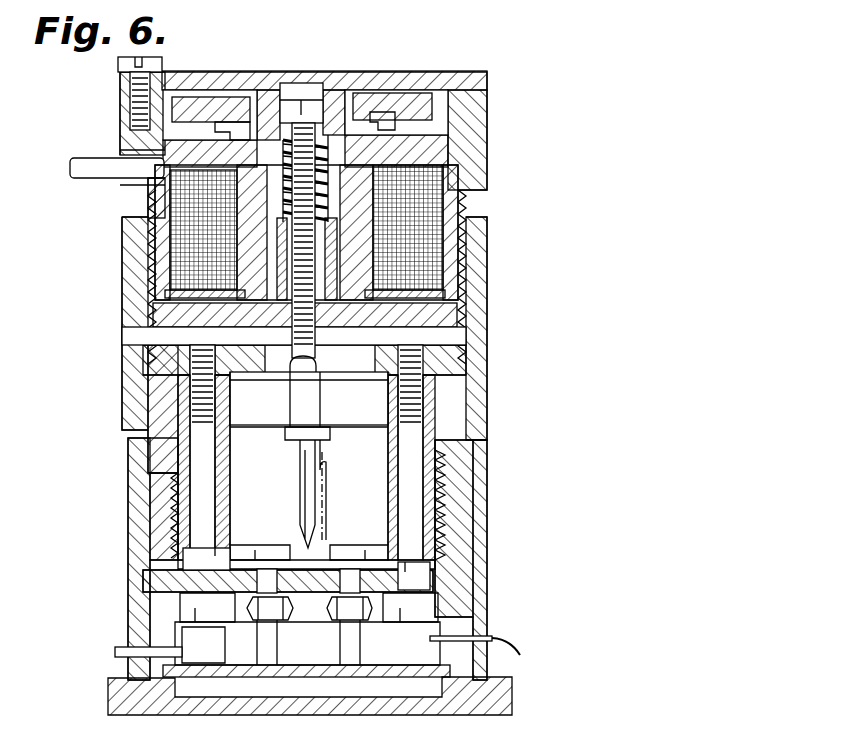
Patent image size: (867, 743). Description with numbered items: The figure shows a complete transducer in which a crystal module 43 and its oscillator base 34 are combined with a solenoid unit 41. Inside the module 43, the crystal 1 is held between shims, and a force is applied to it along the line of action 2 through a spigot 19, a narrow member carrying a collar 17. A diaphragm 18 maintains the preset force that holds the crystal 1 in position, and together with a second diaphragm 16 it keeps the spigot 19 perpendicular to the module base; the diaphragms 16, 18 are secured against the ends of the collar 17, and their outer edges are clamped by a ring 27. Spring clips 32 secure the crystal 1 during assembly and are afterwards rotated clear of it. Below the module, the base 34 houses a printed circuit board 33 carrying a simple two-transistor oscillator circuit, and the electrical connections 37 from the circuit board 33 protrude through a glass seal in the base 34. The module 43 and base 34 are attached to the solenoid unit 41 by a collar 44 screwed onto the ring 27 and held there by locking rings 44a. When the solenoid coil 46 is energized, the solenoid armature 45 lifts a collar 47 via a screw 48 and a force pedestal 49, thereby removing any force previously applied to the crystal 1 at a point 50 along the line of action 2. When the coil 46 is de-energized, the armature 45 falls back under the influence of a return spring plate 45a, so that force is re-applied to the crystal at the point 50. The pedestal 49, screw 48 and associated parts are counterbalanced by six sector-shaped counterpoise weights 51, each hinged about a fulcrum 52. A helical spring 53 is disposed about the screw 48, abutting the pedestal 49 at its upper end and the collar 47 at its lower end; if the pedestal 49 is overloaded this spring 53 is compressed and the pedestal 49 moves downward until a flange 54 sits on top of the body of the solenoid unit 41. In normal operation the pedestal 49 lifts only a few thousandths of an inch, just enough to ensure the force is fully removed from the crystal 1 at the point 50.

The crystal 1 is at (302, 500).
The line of action 2 is at (303, 2).
The second diaphragm 16 is at (350, 382).
The collar 17 is at (290, 406).
The diaphragm 18 is at (352, 428).
The spigot 19 is at (300, 440).
The ring 27 is at (470, 362).
The spring clips 32 is at (330, 484).
The printed circuit board 33 is at (348, 668).
The base 34 is at (486, 634).
The electrical connections 37 is at (116, 652).
The solenoid unit 41 is at (488, 160).
The crystal module 43 is at (440, 508).
The collar 44 is at (124, 326).
The locking rings 44a is at (470, 232).
The solenoid armature 45 is at (460, 318).
The return spring plate 45a is at (410, 298).
The solenoid coil 46 is at (378, 170).
The collar 47 is at (340, 236).
The screw 48 is at (335, 272).
The force pedestal 49 is at (330, 82).
The point 50 is at (300, 372).
The counterpoise weights 51 is at (190, 100).
The fulcra 52 is at (228, 128).
The helical spring 53 is at (125, 142).
The flange 54 is at (380, 150).